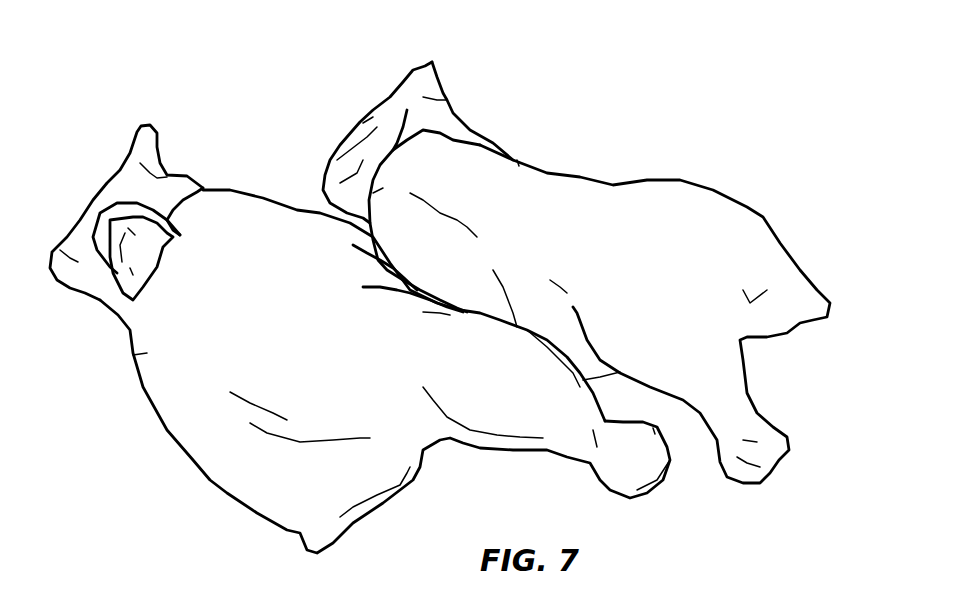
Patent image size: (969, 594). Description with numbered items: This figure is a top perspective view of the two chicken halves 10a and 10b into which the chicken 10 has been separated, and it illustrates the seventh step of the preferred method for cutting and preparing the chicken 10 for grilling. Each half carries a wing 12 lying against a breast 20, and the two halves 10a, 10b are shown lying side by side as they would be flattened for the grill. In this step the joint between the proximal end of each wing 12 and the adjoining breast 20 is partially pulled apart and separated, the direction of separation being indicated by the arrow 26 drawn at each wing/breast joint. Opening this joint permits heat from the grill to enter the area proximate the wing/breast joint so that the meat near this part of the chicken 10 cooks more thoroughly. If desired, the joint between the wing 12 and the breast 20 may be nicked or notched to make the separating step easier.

The chicken 10 is at (683, 108).
The chicken half 10a is at (227, 493).
The chicken half 10b is at (687, 180).
The wing 12 is at (103, 182).
The breast 20 is at (147, 353).
The arrow 26 is at (121, 286).